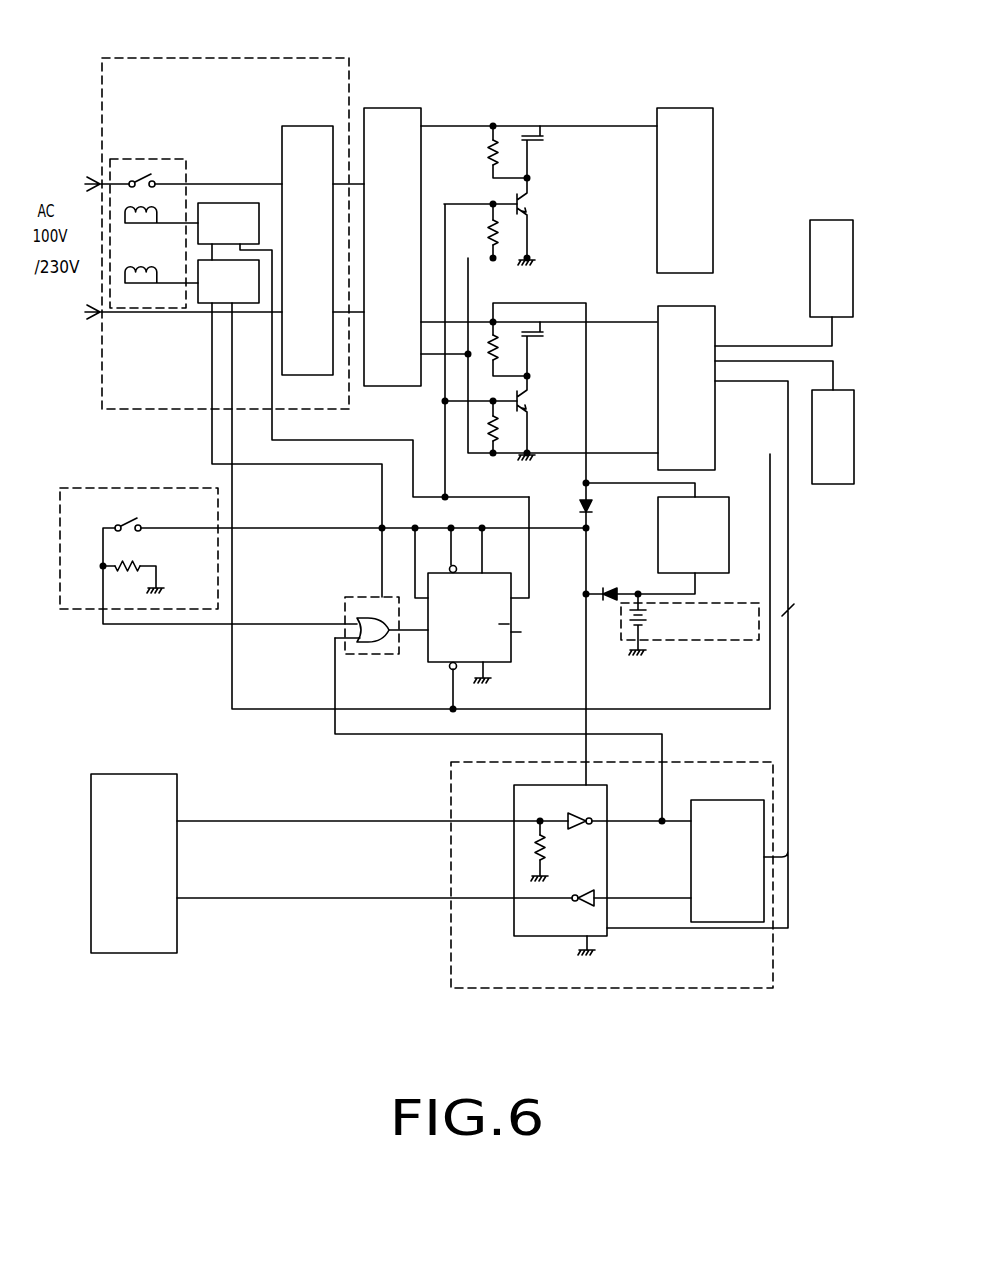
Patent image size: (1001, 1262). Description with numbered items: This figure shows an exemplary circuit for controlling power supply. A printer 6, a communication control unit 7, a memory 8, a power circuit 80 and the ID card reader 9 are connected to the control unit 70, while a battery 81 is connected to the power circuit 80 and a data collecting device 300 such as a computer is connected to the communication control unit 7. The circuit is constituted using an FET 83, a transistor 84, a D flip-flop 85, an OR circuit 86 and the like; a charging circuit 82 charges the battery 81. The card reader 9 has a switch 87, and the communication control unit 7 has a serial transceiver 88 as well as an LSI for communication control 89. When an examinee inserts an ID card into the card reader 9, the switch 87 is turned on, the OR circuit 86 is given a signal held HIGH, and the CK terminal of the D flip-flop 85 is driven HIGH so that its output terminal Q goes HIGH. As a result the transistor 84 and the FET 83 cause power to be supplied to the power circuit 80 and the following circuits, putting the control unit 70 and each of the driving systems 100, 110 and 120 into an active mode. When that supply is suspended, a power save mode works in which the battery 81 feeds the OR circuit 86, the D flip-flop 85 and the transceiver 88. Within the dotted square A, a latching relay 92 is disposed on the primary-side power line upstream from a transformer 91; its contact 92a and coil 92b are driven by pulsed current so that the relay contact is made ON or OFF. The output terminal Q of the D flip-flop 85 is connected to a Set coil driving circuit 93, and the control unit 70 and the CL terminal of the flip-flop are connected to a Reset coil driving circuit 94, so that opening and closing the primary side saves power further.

The dotted square A is at (258, 58).
The latching relay 92 is at (196, 237).
The relay switch contact 92a is at (120, 207).
The relay reset coil 92b is at (120, 272).
The Set coil driving circuit 93 is at (221, 203).
The Reset coil driving circuit 94 is at (207, 303).
The transformer 91 is at (305, 125).
The power circuit 80 is at (383, 106).
The FET 83 is at (538, 145).
The transistor 84 is at (530, 203).
The driving system 100 is at (726, 168).
The driving system 110 is at (726, 184).
The driving system 120 is at (713, 121).
The control unit 70 is at (715, 333).
The printer 6 is at (823, 220).
The memory 8 is at (823, 486).
The charging circuit 82 is at (658, 530).
The battery 81 is at (707, 641).
The ID card reader 9 is at (208, 522).
The switch 87 is at (128, 533).
The OR circuit 86 is at (345, 610).
The D flip-flop 85 is at (513, 622).
The communication control unit 7 is at (612, 908).
The RS-232C transceiver 88 is at (530, 938).
The LSI for communication control 89 is at (710, 798).
The data collecting device 300 is at (122, 954).